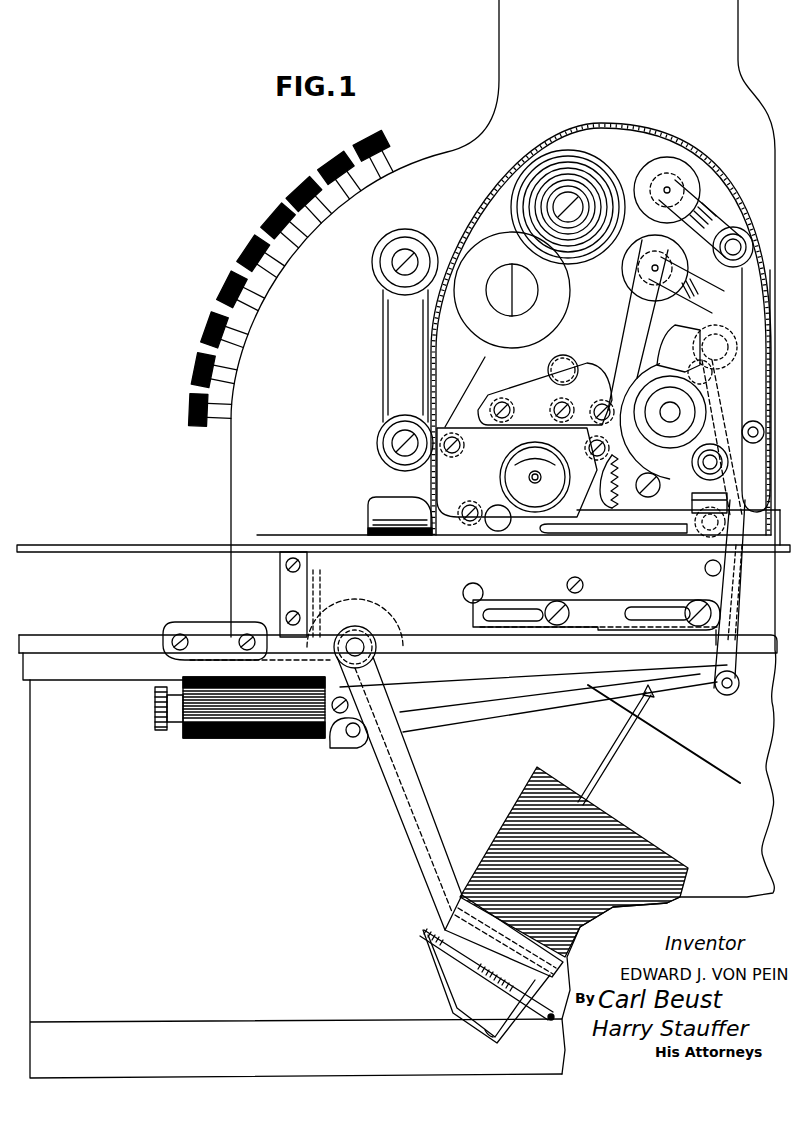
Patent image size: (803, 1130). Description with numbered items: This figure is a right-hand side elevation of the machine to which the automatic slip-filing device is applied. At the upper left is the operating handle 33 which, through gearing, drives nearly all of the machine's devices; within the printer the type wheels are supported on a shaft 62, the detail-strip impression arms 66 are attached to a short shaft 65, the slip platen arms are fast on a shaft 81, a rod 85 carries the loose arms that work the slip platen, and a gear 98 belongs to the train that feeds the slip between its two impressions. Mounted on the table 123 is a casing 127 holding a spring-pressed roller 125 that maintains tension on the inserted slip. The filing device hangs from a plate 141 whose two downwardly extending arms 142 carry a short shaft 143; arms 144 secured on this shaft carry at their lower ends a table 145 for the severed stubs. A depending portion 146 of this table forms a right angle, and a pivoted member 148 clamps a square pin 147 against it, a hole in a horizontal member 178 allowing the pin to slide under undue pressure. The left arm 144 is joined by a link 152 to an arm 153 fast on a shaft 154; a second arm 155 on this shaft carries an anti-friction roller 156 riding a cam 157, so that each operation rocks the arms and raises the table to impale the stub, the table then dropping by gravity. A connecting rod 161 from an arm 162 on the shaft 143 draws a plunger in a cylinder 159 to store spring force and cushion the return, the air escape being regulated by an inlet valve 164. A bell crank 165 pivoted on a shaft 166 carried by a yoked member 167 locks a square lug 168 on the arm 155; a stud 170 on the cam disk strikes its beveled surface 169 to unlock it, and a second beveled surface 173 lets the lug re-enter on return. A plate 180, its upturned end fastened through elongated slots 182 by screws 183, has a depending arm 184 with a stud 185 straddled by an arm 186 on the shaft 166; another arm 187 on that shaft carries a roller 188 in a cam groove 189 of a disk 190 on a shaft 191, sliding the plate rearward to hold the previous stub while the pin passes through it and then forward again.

The operating handle 33 is at (390, 298).
The shaft 62 is at (535, 482).
The short shaft 65 is at (563, 374).
The arms 66 is at (537, 358).
The shaft 81 is at (479, 590).
The rod 85 is at (706, 572).
The gear 98 is at (611, 490).
The table 123 is at (148, 543).
The roller 125 is at (410, 515).
The casing 127 is at (367, 518).
The plate 141 is at (328, 613).
The downwardly extending arms 142 is at (345, 608).
The short shaft 143 is at (360, 636).
The arms 144 is at (402, 777).
The table 145 is at (465, 923).
The depending portion 146 is at (482, 1000).
The square pin 147 is at (607, 779).
The member 148 is at (537, 1012).
The link 152 is at (570, 693).
The arm 153 is at (758, 652).
The shaft 154 is at (710, 527).
The arm 155 is at (677, 510).
The anti-friction roller 156 is at (715, 363).
The cam 157 is at (690, 336).
The cylinder 159 is at (280, 738).
The connecting rod 161 is at (330, 732).
The arm 162 is at (340, 687).
The inlet valve 164 is at (157, 735).
The bell crank 165 is at (755, 283).
The shaft 166 is at (755, 427).
The yoked member 167 is at (720, 490).
The square lug 168 is at (692, 462).
The beveled surface 169 is at (745, 340).
The stud 170 is at (747, 333).
The beveled surface 173 is at (666, 430).
The horizontal member 178 is at (483, 1035).
The plate 180 is at (586, 628).
The elongated slots 182 is at (518, 615).
The screws 183 is at (560, 627).
The depending arm 184 is at (716, 638).
The stud 185 is at (724, 695).
The arm 186 is at (750, 493).
The arm 187 is at (747, 410).
The anti-friction roller 188 is at (685, 398).
The cam groove 189 is at (660, 417).
The disk 190 is at (663, 330).
The shaft 191 is at (673, 412).